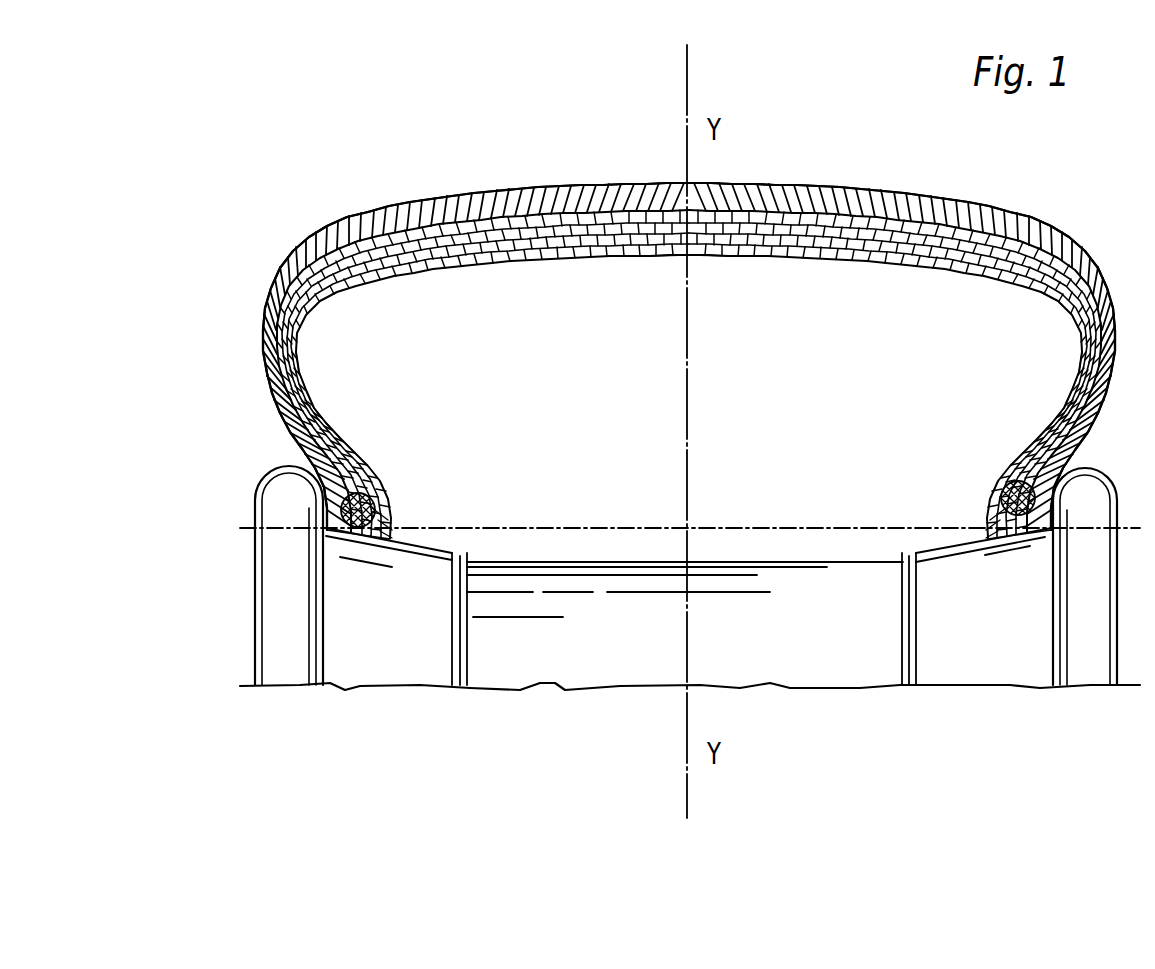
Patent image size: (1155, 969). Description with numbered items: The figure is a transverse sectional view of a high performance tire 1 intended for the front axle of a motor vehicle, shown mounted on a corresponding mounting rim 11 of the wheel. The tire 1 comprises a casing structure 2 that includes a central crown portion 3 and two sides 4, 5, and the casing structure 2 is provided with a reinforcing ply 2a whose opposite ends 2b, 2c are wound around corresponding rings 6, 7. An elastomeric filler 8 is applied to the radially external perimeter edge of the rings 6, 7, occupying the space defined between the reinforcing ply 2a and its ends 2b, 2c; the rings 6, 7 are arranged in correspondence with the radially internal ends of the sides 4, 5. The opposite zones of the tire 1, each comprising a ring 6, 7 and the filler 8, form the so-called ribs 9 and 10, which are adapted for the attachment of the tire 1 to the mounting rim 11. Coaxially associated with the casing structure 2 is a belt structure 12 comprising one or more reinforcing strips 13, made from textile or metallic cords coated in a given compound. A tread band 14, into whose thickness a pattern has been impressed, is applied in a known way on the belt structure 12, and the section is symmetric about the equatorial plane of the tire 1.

The tire 1 is at (228, 221).
The casing structure 2 is at (873, 257).
The reinforcing ply 2a is at (330, 450).
The end of the reinforcing ply 2b is at (310, 457).
The end of the reinforcing ply 2c is at (1070, 444).
The central crown portion 3 is at (697, 257).
The side 4 is at (276, 320).
The side 5 is at (1107, 296).
The ring 6 is at (392, 507).
The ring 7 is at (990, 497).
The elastomeric filler 8 is at (372, 463).
The rib 9 is at (418, 507).
The rib 10 is at (972, 507).
The mounting rim 11 is at (383, 665).
The belt structure 12 is at (1027, 240).
The reinforcing strip 13 is at (998, 212).
The tread band 14 is at (790, 188).